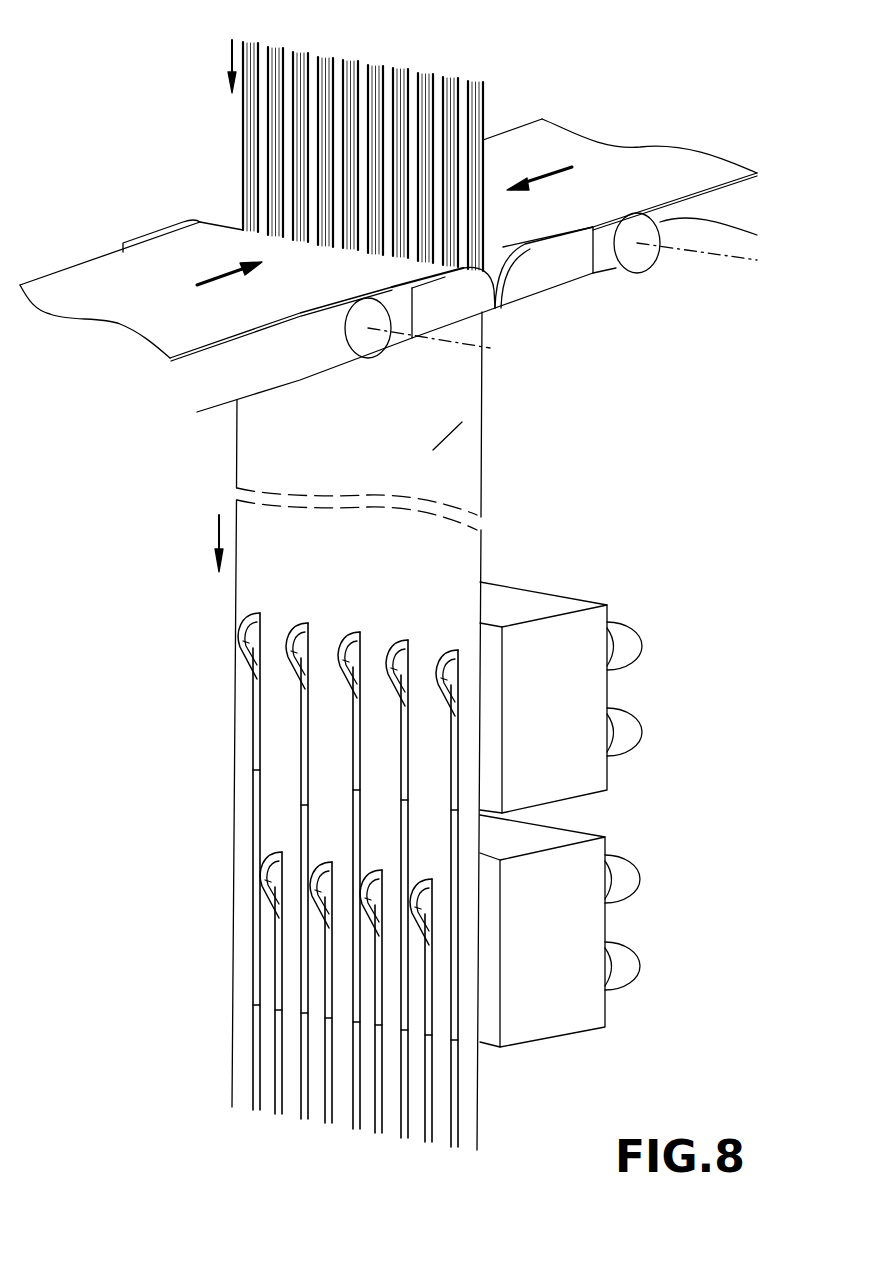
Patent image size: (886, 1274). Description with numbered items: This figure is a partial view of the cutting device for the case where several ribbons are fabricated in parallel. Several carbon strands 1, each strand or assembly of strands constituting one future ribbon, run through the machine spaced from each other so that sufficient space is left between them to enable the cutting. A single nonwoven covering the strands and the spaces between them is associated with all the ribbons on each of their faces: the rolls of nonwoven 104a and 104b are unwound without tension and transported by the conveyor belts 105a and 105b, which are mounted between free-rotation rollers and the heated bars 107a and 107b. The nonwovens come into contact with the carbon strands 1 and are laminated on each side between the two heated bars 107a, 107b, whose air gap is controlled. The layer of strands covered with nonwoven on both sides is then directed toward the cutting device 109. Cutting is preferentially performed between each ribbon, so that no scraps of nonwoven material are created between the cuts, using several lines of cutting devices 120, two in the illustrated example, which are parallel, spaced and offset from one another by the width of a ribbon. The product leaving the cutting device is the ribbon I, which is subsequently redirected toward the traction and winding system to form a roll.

The carbon strands 1 is at (403, 73).
The roll of nonwoven 104a is at (72, 283).
The roll of nonwoven 104b is at (628, 158).
The conveyor belt 105a is at (313, 365).
The conveyor belt 105b is at (665, 253).
The heated bar 107a is at (475, 302).
The heated bar 107b is at (558, 272).
The cutting device 109 is at (700, 560).
The cutting devices 120 is at (242, 640).
The ribbon I is at (390, 1125).